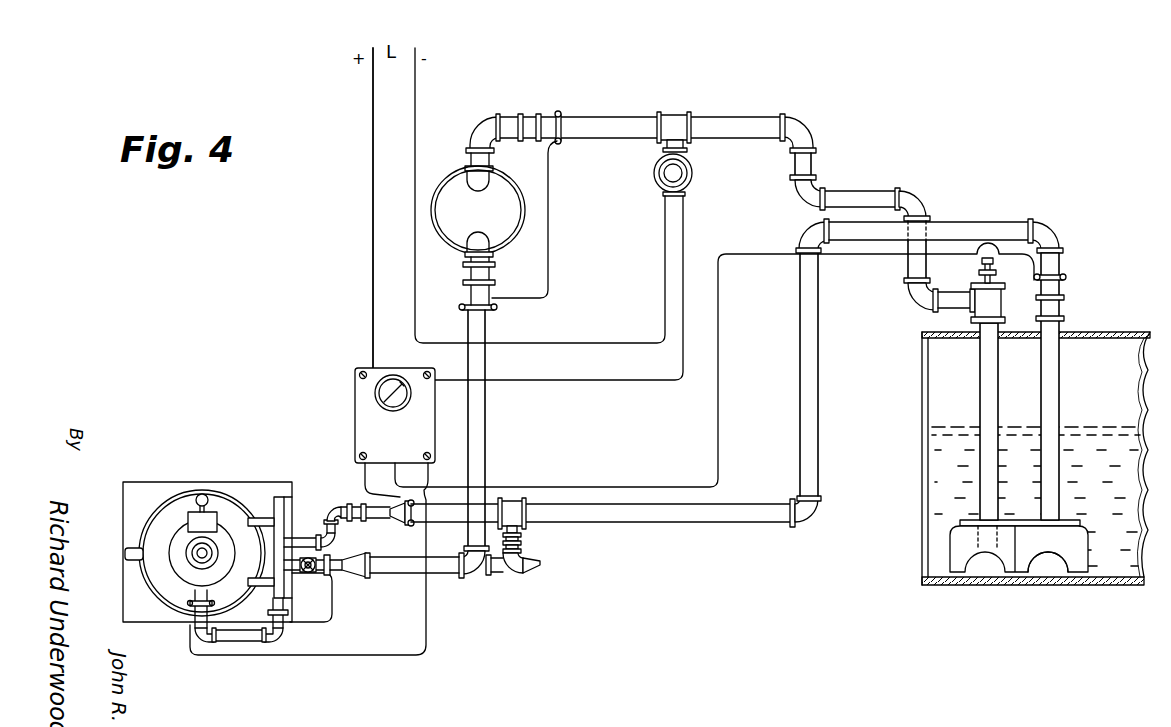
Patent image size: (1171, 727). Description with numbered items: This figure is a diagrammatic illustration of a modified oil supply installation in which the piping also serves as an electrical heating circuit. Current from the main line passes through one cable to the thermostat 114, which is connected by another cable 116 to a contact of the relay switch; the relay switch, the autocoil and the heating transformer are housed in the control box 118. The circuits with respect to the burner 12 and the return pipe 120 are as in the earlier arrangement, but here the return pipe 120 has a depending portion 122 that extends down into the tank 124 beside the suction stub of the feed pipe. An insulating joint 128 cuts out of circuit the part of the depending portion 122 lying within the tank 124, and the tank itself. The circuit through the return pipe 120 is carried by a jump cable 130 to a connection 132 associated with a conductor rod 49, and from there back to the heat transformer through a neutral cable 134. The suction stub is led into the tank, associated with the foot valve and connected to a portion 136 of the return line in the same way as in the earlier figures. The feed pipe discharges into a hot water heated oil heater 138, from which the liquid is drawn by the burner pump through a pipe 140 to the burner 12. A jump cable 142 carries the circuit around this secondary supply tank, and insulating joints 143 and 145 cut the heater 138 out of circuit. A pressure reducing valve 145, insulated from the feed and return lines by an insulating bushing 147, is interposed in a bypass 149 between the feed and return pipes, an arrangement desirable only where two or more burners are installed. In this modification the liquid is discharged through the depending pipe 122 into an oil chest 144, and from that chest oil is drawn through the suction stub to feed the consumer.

The burner 12 is at (240, 495).
The conductor rod 49 is at (975, 274).
The thermostat 114 is at (688, 172).
The cable 116 is at (658, 383).
The control box 118 is at (353, 407).
The return pipe 120 is at (753, 521).
The depending portion 122 is at (1052, 262).
The tank 124 is at (990, 580).
The insulating joint 128 is at (1050, 308).
The jump cable 130 is at (1012, 246).
The connection 132 is at (986, 256).
The neutral cable 134 is at (722, 362).
The portion of return line 136 is at (907, 268).
The hot water heated oil heater 138 is at (509, 200).
The pipe 140 is at (480, 458).
The jump cable 142 is at (550, 249).
The insulating joint 143 is at (478, 274).
The oil chest 144 is at (1036, 545).
The insulating joint 145 is at (527, 128).
The insulating bushing 147 is at (524, 547).
The bypass 149 is at (546, 580).